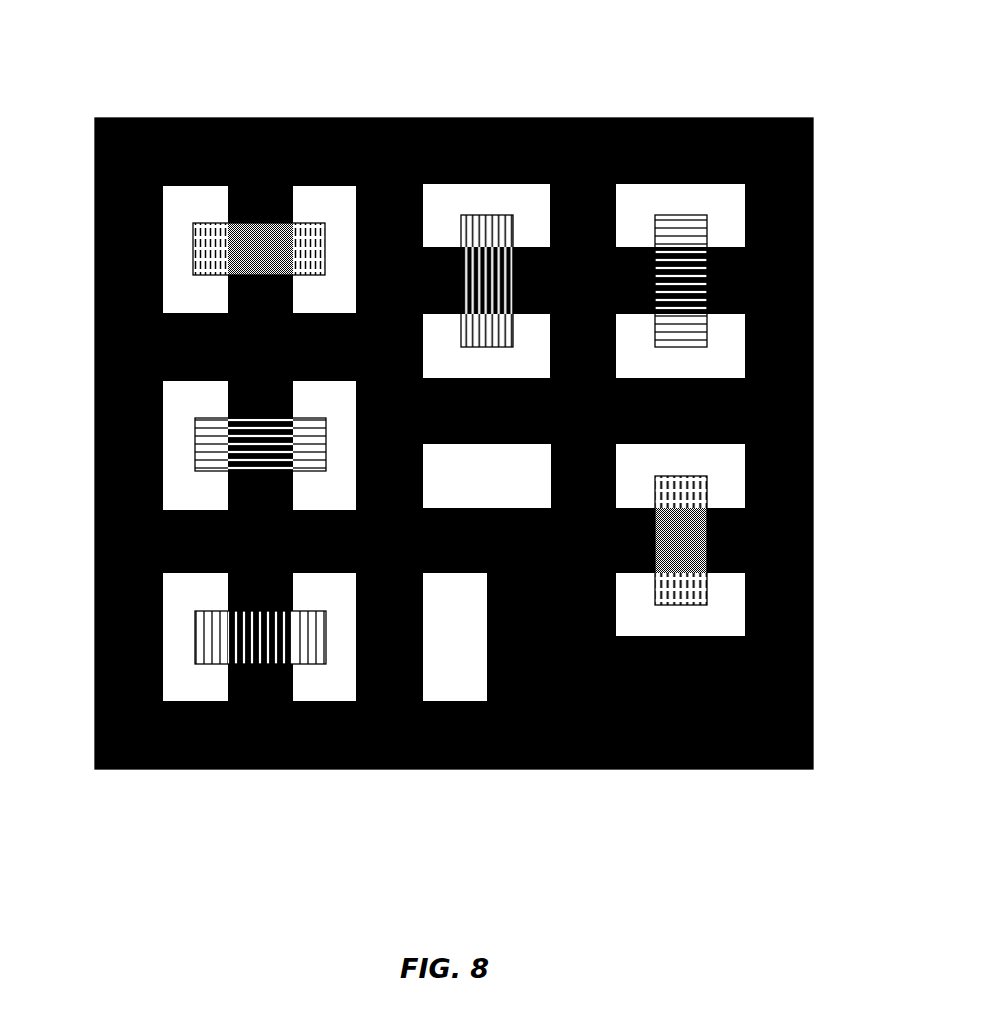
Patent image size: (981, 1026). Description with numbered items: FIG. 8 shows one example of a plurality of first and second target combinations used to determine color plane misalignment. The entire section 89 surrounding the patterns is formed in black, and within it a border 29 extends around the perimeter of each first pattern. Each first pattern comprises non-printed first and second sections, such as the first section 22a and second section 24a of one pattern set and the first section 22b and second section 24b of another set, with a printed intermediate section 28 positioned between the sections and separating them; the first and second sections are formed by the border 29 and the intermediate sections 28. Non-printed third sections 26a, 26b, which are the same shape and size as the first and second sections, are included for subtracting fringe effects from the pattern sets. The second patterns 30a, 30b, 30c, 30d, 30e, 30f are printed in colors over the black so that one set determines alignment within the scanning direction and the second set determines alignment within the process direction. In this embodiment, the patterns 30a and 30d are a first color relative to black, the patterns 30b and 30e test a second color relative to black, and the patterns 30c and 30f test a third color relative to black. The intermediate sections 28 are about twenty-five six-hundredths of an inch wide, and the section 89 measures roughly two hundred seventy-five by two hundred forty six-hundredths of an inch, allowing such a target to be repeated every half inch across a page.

The section 89 is at (796, 84).
The border 29 is at (135, 110).
The first section 22a is at (178, 188).
The second section 24a is at (313, 188).
The first section 22b is at (522, 188).
The second section 24b is at (522, 325).
The third section 26a is at (435, 682).
The third section 26b is at (497, 477).
The intermediate section 28 is at (245, 195).
The second pattern 30a is at (205, 243).
The second pattern 30b is at (205, 430).
The second pattern 30c is at (205, 612).
The second pattern 30d is at (470, 225).
The second pattern 30e is at (682, 216).
The second pattern 30f is at (680, 480).